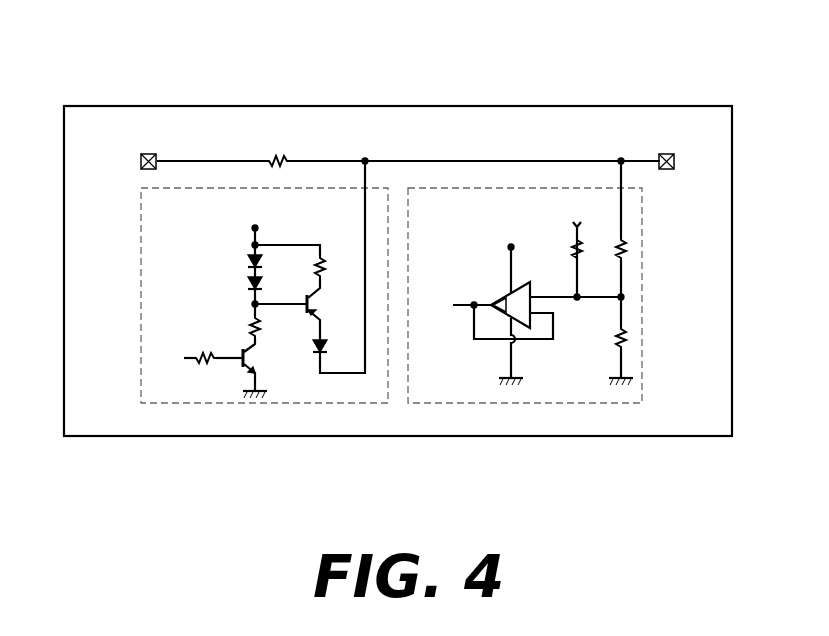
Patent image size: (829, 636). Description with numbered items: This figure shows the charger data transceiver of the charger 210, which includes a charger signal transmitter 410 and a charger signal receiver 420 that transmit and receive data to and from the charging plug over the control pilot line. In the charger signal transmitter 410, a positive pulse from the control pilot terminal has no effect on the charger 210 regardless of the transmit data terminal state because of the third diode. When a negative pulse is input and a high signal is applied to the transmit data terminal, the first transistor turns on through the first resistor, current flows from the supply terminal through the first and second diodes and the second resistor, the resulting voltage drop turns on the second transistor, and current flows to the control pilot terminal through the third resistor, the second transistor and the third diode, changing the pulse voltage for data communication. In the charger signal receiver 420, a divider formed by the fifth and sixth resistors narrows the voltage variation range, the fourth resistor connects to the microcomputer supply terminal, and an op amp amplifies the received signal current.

The charger 210 is at (411, 62).
The charger signal transmitter 410 is at (141, 244).
The charger signal receiver 420 is at (642, 243).